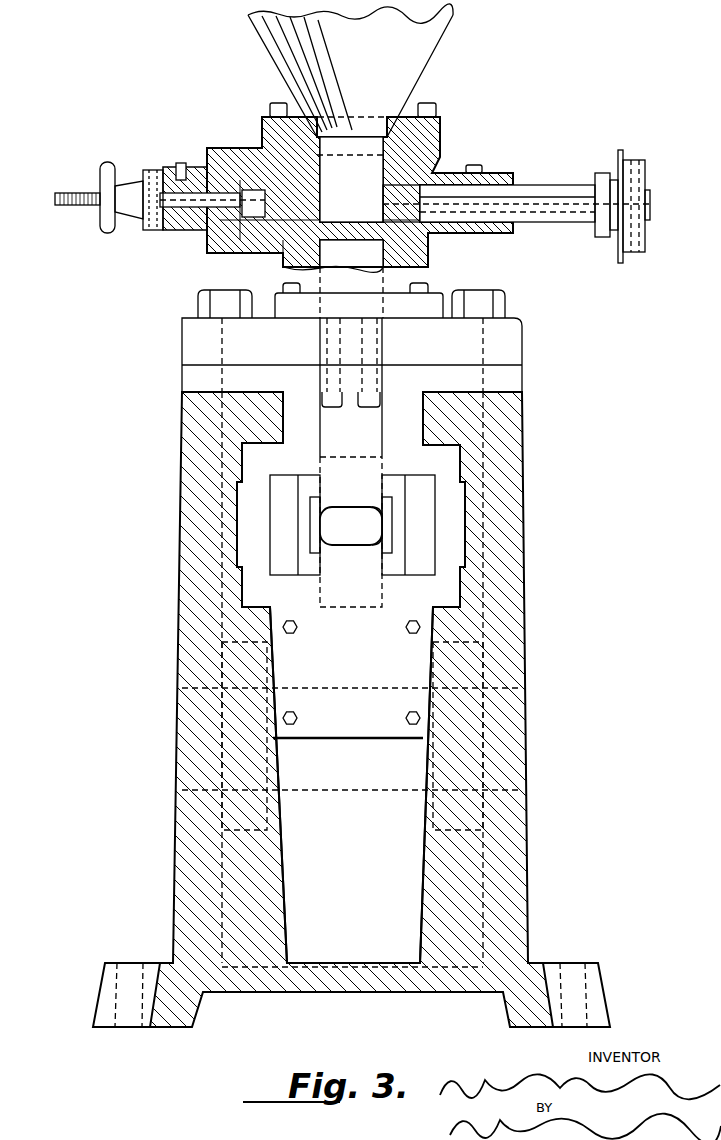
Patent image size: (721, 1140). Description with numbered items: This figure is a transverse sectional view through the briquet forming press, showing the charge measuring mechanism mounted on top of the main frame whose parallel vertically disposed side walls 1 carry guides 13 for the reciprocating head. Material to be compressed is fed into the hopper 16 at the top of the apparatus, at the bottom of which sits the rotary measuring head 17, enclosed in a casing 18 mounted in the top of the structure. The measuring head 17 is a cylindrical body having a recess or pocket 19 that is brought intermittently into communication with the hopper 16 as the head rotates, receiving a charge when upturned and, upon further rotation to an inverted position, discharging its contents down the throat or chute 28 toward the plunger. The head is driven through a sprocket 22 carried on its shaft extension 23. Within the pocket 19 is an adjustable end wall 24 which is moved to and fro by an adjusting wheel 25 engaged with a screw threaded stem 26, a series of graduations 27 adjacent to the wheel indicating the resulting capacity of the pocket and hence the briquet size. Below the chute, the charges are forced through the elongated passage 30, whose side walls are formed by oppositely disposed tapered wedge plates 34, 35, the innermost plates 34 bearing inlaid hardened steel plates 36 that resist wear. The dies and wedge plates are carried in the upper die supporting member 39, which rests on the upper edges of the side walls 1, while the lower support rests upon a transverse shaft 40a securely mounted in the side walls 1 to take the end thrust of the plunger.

The side walls 1 is at (515, 545).
The guides 13 is at (440, 445).
The hopper 16 is at (350, 70).
The rotary measuring head 17 is at (395, 190).
The casing 18 is at (420, 256).
The pocket 19 is at (352, 179).
The sprocket 22 is at (624, 262).
The shaft extension 23 is at (540, 190).
The adjustable end wall 24 is at (275, 185).
The adjusting wheel 25 is at (109, 235).
The screw threaded stem 26 is at (80, 206).
The graduations 27 is at (140, 178).
The throat or chute 28 is at (351, 256).
The elongated passage 30 is at (350, 523).
The wedge plates 34 is at (398, 562).
The wedge plates 35 is at (285, 570).
The hardened steel plates 36 is at (389, 503).
The upper die supporting member 39 is at (510, 342).
The transverse shaft 40a is at (339, 786).